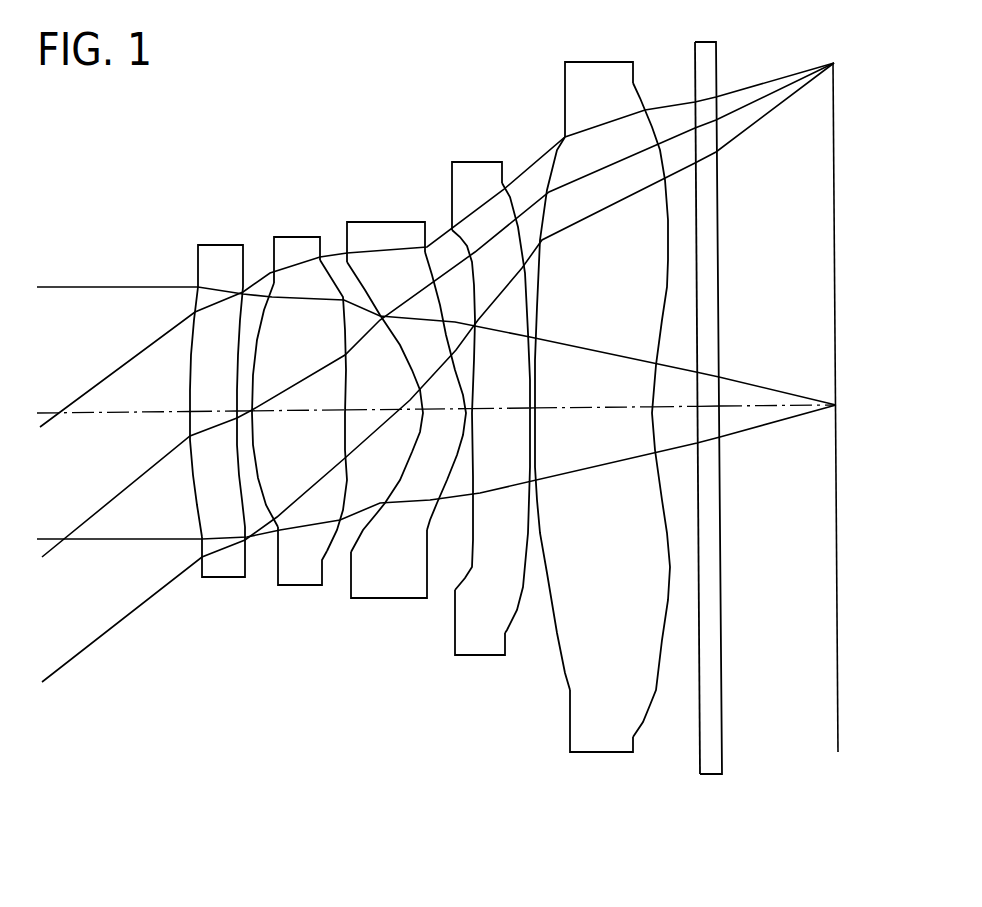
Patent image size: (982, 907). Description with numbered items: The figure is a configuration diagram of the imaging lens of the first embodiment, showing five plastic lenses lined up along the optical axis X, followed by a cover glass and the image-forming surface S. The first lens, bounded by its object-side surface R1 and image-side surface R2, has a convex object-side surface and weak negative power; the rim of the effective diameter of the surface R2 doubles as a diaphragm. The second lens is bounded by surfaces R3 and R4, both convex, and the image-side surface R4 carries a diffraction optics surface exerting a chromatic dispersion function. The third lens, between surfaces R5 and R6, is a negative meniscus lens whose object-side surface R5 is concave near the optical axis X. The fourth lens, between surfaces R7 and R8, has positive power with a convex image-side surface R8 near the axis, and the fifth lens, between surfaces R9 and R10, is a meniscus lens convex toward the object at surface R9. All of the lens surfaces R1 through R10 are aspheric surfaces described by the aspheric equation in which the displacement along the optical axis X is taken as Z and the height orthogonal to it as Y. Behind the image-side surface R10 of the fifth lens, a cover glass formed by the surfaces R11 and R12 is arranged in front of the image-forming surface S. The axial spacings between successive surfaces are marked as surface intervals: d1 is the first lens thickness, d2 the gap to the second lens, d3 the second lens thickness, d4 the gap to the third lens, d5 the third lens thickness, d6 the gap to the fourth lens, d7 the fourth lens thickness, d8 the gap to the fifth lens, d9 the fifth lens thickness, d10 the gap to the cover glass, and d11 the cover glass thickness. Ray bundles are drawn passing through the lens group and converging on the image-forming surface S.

The object-side surface of first lens R1 is at (195, 297).
The image-side surface of first lens R2 is at (245, 520).
The object-side surface of second lens R3 is at (272, 300).
The image-side surface of second lens R4 is at (327, 552).
The object-side surface of third lens R5 is at (380, 313).
The image-side surface of third lens R6 is at (428, 530).
The object-side surface of fourth lens R7 is at (462, 243).
The image-side surface of fourth lens R8 is at (514, 616).
The object-side surface of fifth lens R9 is at (557, 152).
The image-side surface of fifth lens R10 is at (645, 725).
The cover glass surface R11 is at (696, 115).
The cover glass surface R12 is at (722, 692).
The image-forming surface S is at (845, 407).
The optical axis X is at (147, 413).
The surface interval d1 is at (212, 411).
The surface interval d2 is at (248, 430).
The surface interval d3 is at (308, 410).
The surface interval d4 is at (372, 410).
The surface interval d5 is at (448, 410).
The surface interval d6 is at (470, 408).
The surface interval d7 is at (523, 410).
The surface interval d8 is at (534, 408).
The surface interval d9 is at (612, 408).
The surface interval d10 is at (682, 406).
The surface interval d11 is at (706, 408).